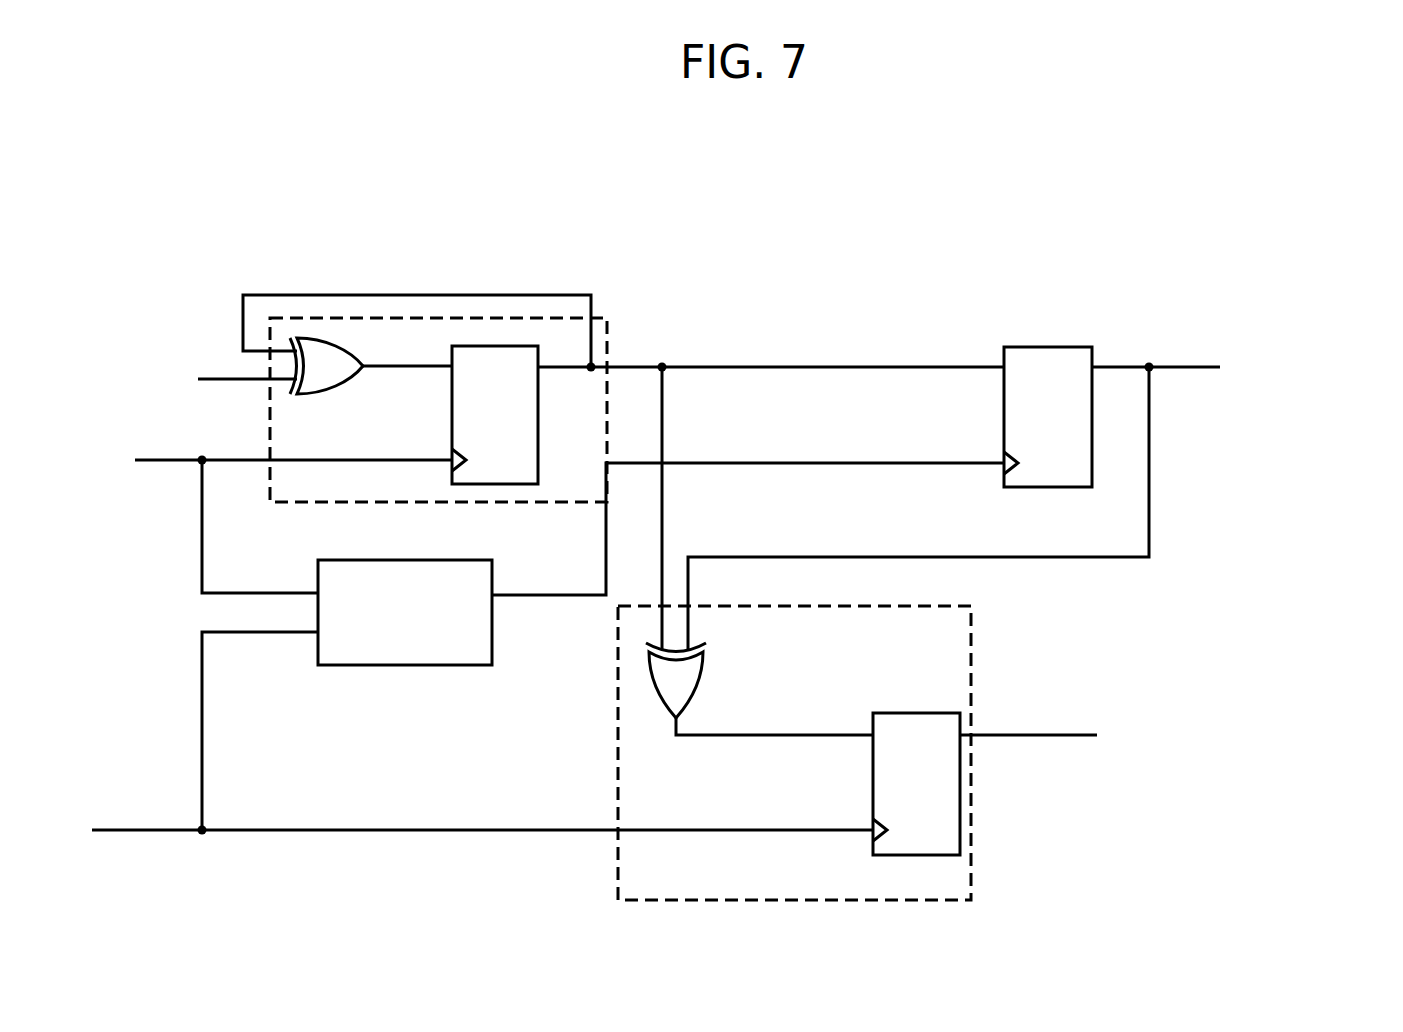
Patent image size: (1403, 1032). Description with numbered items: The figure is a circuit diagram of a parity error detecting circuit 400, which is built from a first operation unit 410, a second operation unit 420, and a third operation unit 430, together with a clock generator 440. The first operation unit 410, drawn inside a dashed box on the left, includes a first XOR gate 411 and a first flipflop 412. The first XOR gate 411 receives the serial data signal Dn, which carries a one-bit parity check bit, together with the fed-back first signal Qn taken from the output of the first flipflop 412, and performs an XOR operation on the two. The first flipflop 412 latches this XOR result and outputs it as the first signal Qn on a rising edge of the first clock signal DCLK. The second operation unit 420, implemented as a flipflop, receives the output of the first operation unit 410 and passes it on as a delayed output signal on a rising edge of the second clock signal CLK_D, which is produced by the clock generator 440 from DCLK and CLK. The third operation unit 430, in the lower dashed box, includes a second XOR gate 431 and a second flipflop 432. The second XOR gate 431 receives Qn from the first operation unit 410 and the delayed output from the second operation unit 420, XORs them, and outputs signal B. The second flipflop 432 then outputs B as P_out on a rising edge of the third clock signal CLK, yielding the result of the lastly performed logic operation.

The parity error detecting circuit 400 is at (1340, 223).
The first operation unit 410 is at (438, 318).
The first XOR gate 411 is at (343, 383).
The first flipflop 412 is at (538, 418).
The second operation unit 420 is at (1048, 347).
The third operation unit 430 is at (971, 658).
The second XOR gate 431 is at (702, 672).
The second flipflop 432 is at (873, 770).
The clock generator 440 is at (442, 665).